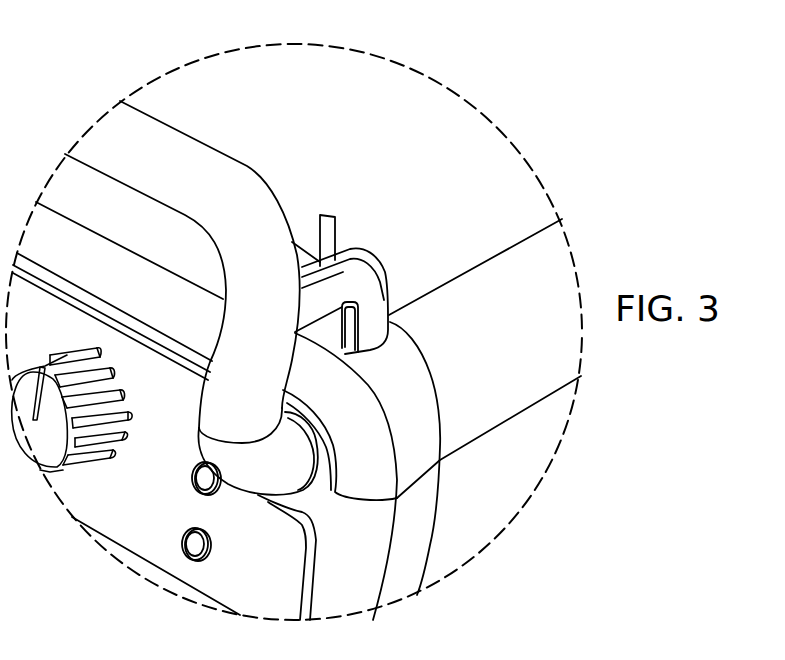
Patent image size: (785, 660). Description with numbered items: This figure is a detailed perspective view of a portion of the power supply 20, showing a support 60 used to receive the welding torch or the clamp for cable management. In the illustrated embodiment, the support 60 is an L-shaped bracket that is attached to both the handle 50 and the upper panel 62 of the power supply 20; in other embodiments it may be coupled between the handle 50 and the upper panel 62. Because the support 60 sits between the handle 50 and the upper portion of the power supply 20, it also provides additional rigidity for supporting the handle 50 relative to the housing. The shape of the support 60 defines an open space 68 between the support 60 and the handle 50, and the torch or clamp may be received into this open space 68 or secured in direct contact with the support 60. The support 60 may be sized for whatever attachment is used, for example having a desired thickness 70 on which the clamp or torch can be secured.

The power supply 20 is at (103, 82).
The handle 50 is at (182, 153).
The upper panel 62 is at (482, 140).
The thickness 70 is at (330, 220).
The support 60 is at (372, 278).
The open space 68 is at (318, 325).